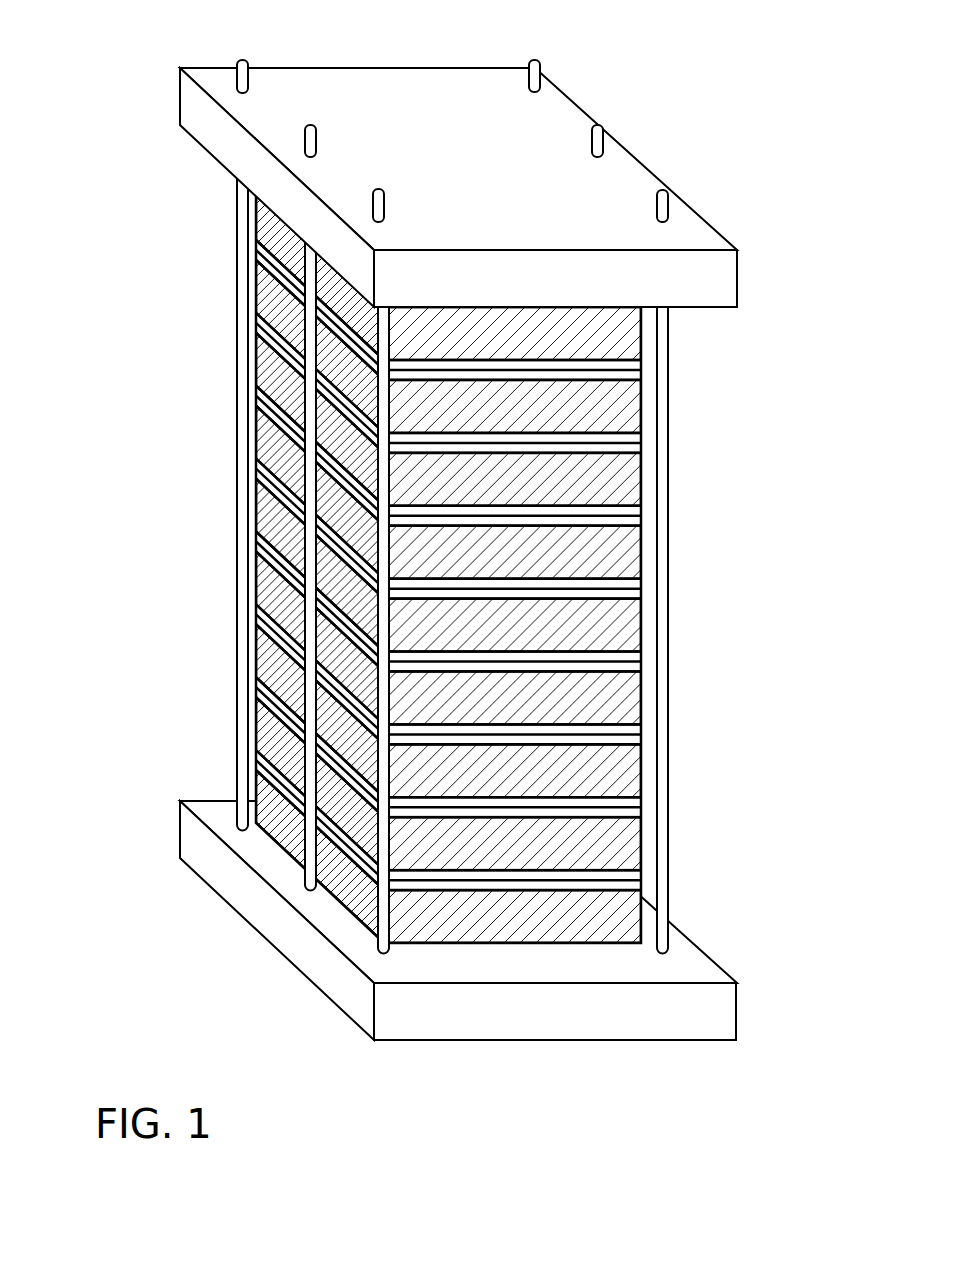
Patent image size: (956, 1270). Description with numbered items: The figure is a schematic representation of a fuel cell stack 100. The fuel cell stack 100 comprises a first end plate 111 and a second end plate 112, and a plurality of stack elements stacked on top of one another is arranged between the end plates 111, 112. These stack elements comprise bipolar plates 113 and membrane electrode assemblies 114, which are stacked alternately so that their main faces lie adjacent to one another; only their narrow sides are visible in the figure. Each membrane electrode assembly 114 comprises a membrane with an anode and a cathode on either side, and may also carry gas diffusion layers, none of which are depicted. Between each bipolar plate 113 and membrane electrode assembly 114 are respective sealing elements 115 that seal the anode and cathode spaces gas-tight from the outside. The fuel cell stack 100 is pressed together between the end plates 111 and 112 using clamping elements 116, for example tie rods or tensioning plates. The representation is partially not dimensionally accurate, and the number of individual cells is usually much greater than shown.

The fuel cell stack 100 is at (462, 520).
The first end plate 111 is at (250, 897).
The second end plate 112 is at (387, 87).
The bipolar plate 113 is at (271, 501).
The membrane electrode assembly 114 is at (276, 552).
The sealing element 115 is at (267, 540).
The clamping element 116 is at (242, 287).